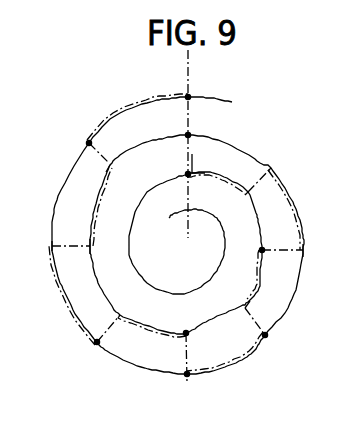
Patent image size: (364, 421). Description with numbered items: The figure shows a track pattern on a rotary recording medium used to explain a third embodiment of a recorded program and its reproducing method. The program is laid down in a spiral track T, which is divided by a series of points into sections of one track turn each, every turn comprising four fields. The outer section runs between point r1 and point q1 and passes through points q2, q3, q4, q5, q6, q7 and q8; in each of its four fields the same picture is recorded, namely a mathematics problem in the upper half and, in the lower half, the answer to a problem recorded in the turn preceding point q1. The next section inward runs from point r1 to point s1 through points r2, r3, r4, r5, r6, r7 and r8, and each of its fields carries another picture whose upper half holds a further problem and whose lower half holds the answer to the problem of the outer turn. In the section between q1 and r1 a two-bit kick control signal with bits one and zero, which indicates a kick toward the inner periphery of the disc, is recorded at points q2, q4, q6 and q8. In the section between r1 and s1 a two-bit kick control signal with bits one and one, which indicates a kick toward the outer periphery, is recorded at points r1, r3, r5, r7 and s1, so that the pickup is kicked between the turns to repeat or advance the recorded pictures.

The spiral track T is at (50, 189).
The point q1 is at (197, 144).
The point q2 is at (85, 144).
The point q3 is at (55, 251).
The point q4 is at (96, 340).
The point q5 is at (188, 367).
The point q6 is at (267, 331).
The point q7 is at (294, 256).
The point q8 is at (271, 171).
The point r1 is at (196, 127).
The point r2 is at (119, 176).
The point r3 is at (100, 250).
The point r4 is at (127, 308).
The point r5 is at (182, 325).
The point r6 is at (237, 299).
The point r7 is at (252, 256).
The point r8 is at (238, 204).
The point s1 is at (198, 163).